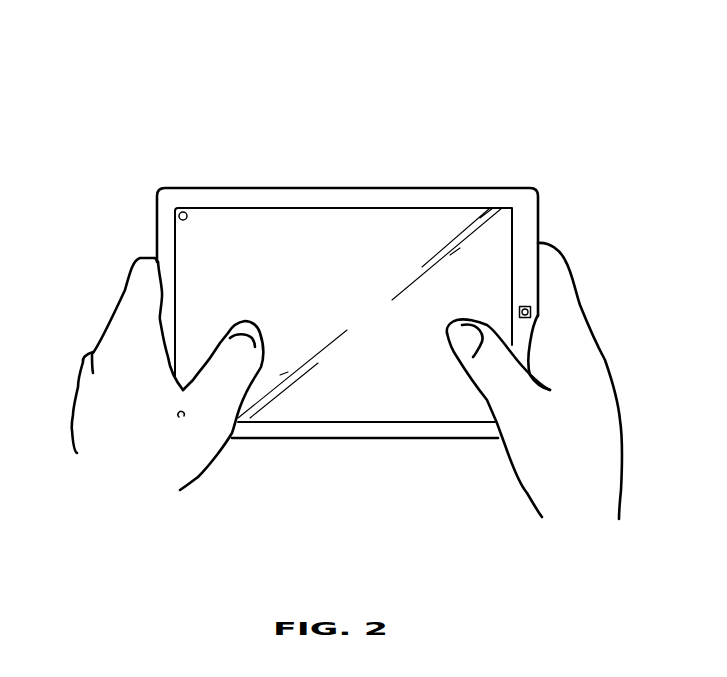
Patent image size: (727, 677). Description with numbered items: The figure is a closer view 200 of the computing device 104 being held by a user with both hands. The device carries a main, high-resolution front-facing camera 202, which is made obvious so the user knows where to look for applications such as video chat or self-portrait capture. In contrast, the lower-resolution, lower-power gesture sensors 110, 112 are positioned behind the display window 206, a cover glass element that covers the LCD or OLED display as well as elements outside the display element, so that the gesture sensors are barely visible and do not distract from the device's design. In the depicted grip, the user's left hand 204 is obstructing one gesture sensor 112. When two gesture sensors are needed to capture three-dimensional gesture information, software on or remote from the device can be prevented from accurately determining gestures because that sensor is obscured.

The closer view 200 is at (603, 91).
The computing device 104 is at (256, 188).
The display window 206 is at (400, 208).
The gesture sensor 110 is at (179, 212).
The gesture sensor 112 is at (176, 417).
The front-facing camera 202 is at (535, 313).
The left hand 204 is at (110, 312).